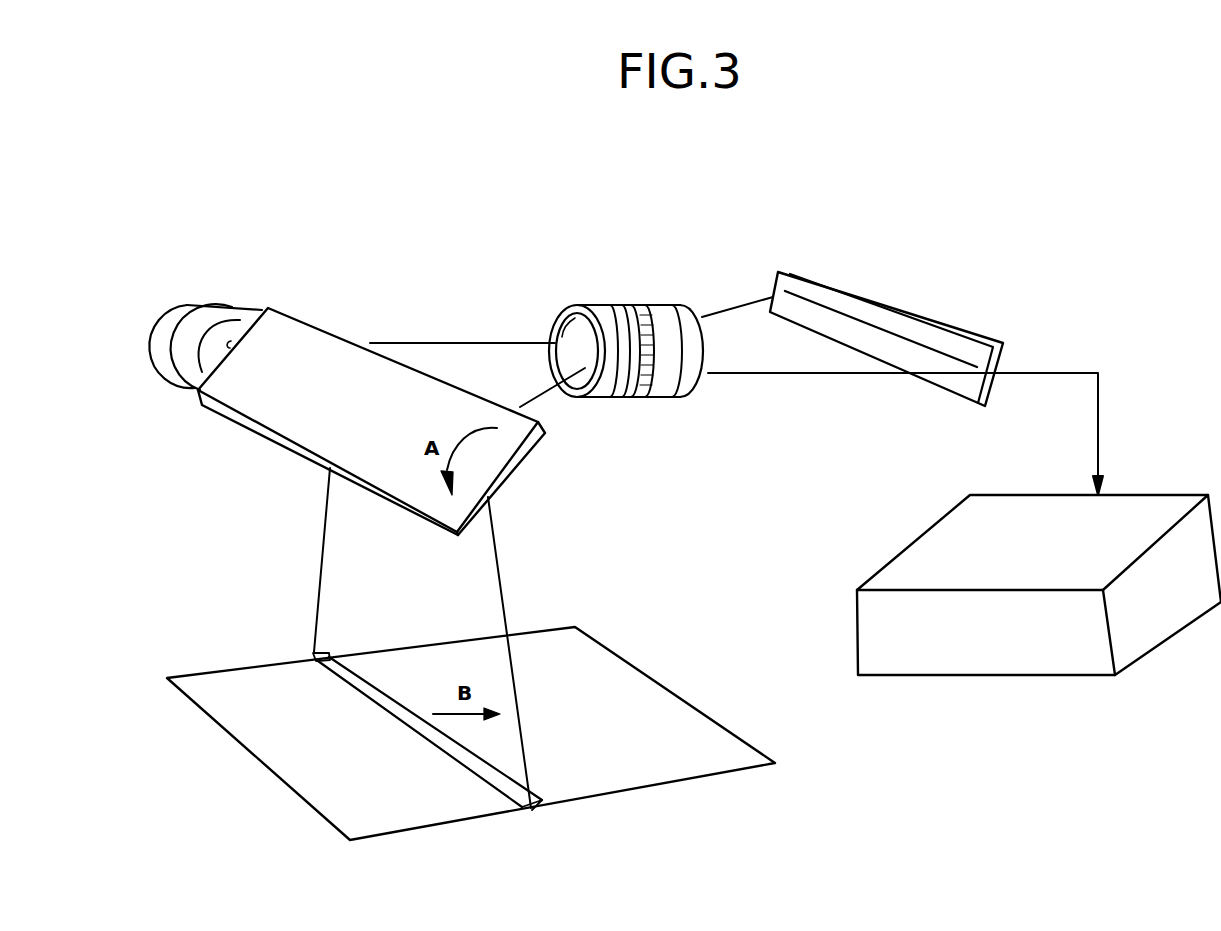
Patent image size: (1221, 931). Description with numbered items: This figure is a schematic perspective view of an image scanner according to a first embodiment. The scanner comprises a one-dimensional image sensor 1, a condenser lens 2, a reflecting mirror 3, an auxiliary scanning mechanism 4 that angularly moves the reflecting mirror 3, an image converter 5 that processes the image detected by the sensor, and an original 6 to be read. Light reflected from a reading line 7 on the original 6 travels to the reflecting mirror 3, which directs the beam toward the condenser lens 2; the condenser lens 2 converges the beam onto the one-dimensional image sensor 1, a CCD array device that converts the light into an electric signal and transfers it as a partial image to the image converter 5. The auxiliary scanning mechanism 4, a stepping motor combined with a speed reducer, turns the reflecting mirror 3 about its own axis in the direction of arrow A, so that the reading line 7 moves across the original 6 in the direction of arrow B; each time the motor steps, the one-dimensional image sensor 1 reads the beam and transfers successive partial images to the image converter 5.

The one-dimensional image sensor 1 is at (905, 313).
The condenser lens 2 is at (648, 306).
The reflecting mirror 3 is at (527, 450).
The auxiliary scanning mechanism 4 is at (192, 316).
The image converter 5 is at (900, 560).
The original 6 is at (650, 684).
The reading line 7 is at (535, 808).